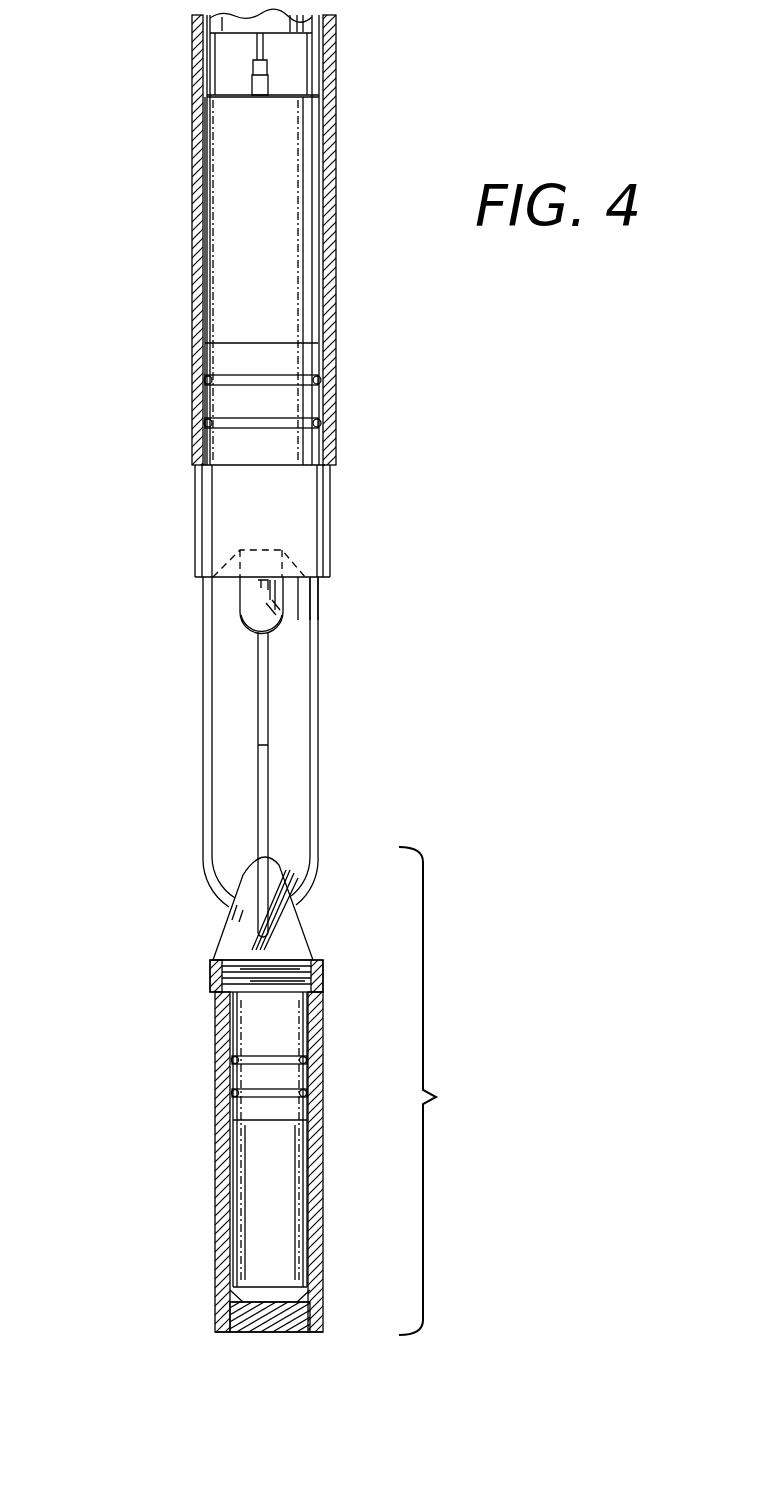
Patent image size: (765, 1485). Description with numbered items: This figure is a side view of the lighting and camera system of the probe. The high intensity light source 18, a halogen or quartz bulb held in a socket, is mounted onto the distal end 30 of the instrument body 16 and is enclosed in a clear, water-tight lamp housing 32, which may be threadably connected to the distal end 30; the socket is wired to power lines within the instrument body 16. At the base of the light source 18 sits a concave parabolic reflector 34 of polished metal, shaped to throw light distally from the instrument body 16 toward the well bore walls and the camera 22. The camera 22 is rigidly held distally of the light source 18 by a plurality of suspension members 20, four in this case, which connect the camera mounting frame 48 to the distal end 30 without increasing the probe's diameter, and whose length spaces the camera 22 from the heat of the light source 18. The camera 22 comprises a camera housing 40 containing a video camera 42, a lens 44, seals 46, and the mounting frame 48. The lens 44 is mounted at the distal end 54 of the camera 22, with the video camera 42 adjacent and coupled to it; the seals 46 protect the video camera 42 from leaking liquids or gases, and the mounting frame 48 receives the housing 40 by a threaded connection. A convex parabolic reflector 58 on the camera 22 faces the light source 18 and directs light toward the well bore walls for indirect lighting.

The instrument body 16 is at (190, 37).
The high intensity light source 18 is at (240, 597).
The suspension members 20 is at (318, 745).
The camera 22 is at (441, 1091).
The distal end 30 is at (298, 583).
The lamp housing 32 is at (243, 622).
The concave parabolic reflector 34 is at (295, 565).
The camera housing 40 is at (317, 1019).
The video camera 42 is at (257, 1190).
The lens 44 is at (286, 1332).
The seals 46 is at (232, 1093).
The mounting frame 48 is at (210, 978).
The distal end of the camera 54 is at (212, 1333).
The convex parabolic reflector 58 is at (227, 925).